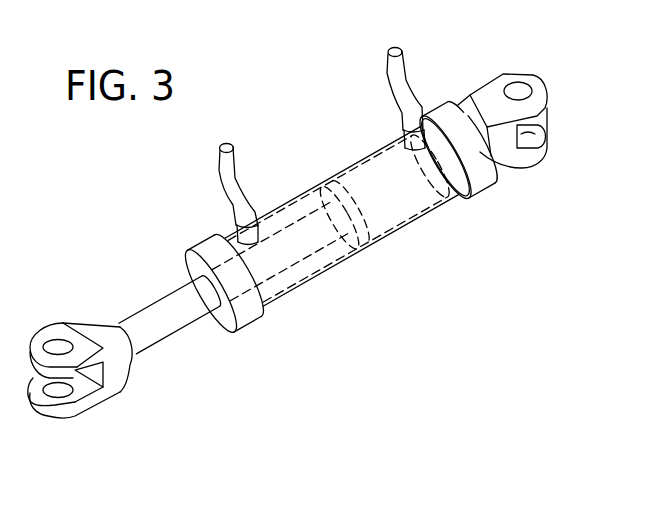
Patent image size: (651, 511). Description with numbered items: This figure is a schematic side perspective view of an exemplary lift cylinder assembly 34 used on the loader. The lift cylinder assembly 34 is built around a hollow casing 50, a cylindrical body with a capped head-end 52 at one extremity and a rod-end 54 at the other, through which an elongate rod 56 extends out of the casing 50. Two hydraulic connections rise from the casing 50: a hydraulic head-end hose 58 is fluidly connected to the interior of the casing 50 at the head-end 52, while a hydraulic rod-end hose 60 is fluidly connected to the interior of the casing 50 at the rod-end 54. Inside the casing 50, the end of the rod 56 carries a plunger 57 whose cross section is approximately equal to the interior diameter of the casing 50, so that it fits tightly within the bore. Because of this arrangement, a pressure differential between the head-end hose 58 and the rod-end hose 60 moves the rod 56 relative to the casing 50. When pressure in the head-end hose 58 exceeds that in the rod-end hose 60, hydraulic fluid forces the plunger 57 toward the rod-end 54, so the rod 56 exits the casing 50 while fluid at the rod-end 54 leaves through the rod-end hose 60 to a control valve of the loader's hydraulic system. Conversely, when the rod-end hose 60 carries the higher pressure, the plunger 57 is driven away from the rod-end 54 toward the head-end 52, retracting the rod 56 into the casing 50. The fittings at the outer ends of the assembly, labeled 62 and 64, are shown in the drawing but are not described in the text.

The lift cylinder assembly 34 is at (355, 316).
The hollow casing 50 is at (434, 205).
The capped head-end 52 is at (496, 216).
The rod-end 54 is at (253, 342).
The elongate rod 56 is at (153, 347).
The plunger 57 is at (367, 258).
The hydraulic head-end hose 58 is at (392, 77).
The hydraulic rod-end hose 60 is at (234, 173).
The clevis 62 is at (530, 157).
The clevis 64 is at (67, 415).